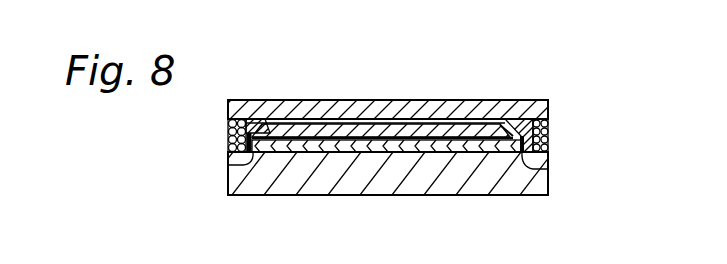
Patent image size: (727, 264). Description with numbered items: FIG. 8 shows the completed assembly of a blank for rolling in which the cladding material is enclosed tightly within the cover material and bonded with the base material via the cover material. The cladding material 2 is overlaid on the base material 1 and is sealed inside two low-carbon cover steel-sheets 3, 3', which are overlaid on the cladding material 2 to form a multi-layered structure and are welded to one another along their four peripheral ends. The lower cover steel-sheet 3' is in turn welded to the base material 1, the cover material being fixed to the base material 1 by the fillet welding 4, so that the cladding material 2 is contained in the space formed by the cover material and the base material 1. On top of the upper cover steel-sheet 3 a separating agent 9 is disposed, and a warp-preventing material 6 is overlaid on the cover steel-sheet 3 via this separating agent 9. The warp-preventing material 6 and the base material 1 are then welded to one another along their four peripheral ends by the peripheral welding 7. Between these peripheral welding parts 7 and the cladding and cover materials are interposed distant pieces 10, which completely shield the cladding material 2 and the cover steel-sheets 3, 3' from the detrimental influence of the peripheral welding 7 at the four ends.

The base material 1 is at (434, 185).
The cladding material 2 is at (450, 137).
The cover steel-sheet 3 is at (384, 96).
The cover steel-sheet 3' is at (387, 104).
The fillet welding 4 is at (235, 165).
The warp-preventing material 6 is at (353, 108).
The peripheral welding 7 is at (228, 131).
The separating agent 9 is at (296, 121).
The distant pieces 10 is at (252, 122).